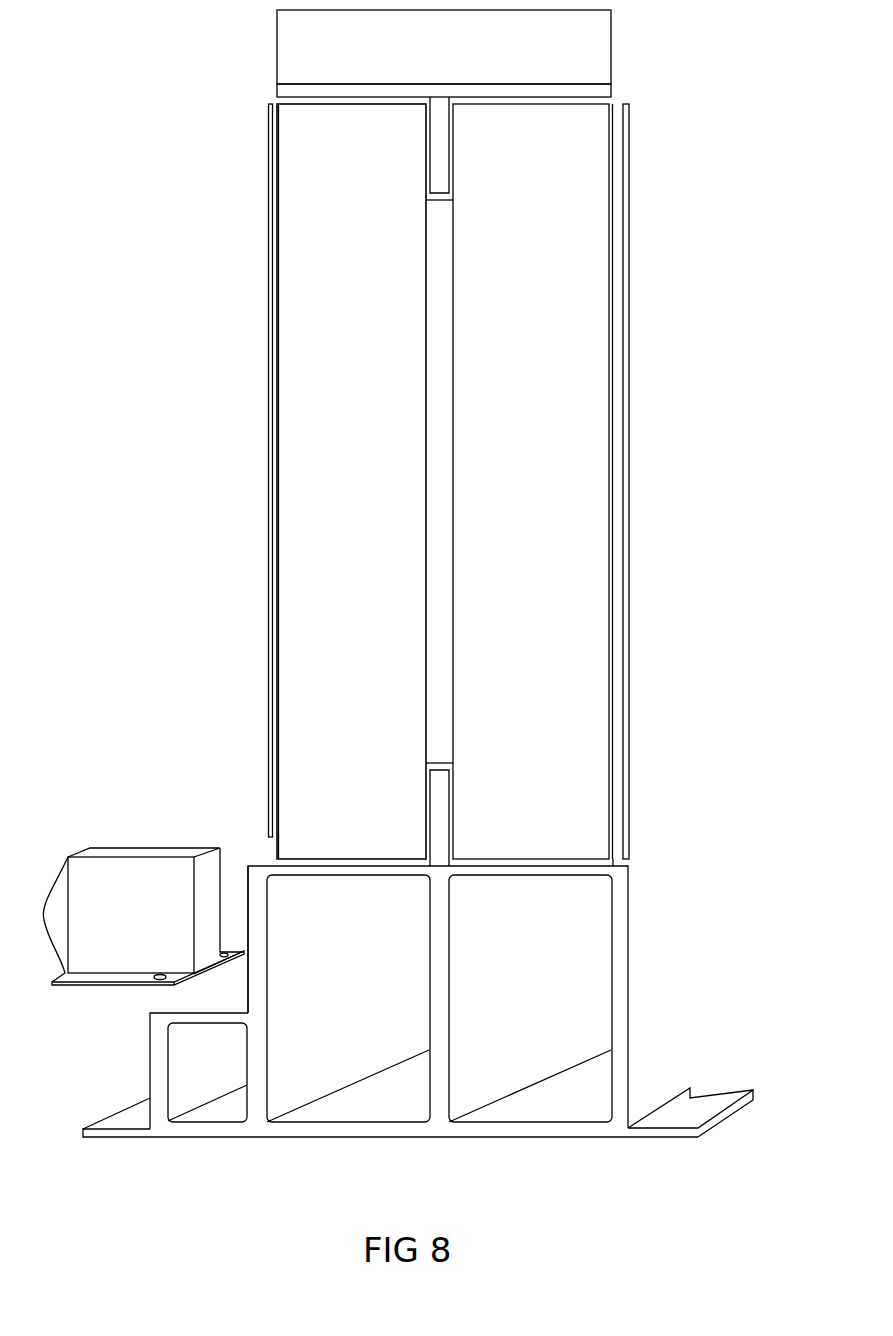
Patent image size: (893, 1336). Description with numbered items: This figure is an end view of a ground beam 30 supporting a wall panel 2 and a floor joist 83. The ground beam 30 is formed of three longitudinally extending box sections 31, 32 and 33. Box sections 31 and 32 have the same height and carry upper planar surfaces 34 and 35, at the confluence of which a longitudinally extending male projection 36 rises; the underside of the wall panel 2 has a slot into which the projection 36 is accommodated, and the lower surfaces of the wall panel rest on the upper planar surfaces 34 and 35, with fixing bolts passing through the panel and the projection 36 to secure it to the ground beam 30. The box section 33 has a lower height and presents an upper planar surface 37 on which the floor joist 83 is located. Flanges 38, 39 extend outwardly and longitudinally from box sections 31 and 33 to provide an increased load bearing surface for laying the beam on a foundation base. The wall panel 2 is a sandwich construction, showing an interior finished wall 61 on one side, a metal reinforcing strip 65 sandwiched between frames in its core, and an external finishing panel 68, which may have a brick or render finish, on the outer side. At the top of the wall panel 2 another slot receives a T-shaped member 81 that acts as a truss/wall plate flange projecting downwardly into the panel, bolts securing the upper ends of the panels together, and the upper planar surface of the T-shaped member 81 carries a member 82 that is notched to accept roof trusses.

The wall panel 2 is at (646, 658).
The ground beam 30 is at (642, 963).
The box section 31 is at (557, 1105).
The box section 32 is at (327, 1104).
The box section 33 is at (218, 1104).
The upper planar surface 34 is at (613, 866).
The upper planar surface 35 is at (260, 863).
The male projection 36 is at (440, 810).
The upper planar surface 37 is at (200, 1007).
The flange 38 is at (703, 1110).
The flange 39 is at (133, 1117).
The interior finished wall 61 is at (268, 731).
The metal reinforcing strip 65 is at (440, 463).
The external finishing panel 68 is at (629, 550).
The T-shaped member 81 is at (611, 90).
The member 82 is at (611, 64).
The floor joist 83 is at (103, 858).